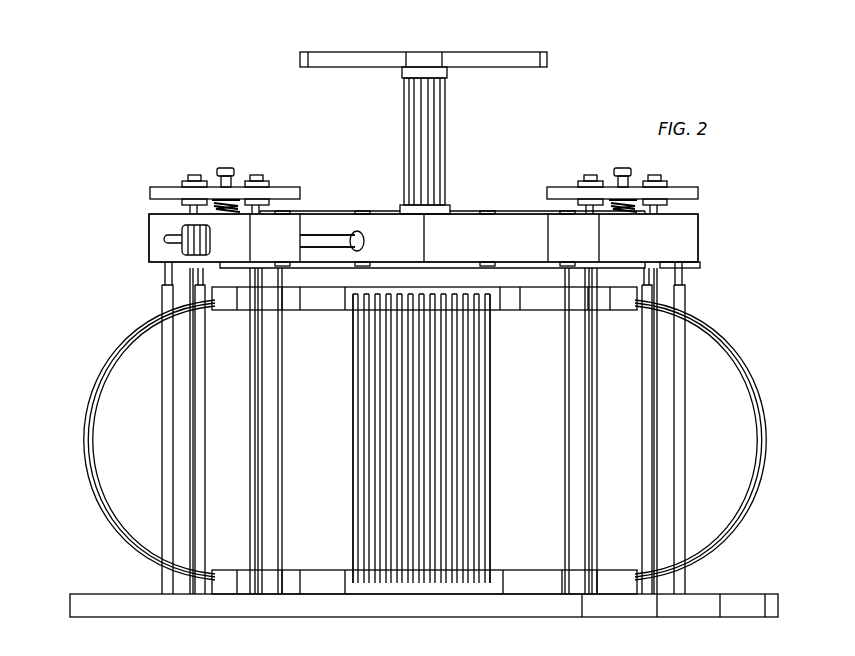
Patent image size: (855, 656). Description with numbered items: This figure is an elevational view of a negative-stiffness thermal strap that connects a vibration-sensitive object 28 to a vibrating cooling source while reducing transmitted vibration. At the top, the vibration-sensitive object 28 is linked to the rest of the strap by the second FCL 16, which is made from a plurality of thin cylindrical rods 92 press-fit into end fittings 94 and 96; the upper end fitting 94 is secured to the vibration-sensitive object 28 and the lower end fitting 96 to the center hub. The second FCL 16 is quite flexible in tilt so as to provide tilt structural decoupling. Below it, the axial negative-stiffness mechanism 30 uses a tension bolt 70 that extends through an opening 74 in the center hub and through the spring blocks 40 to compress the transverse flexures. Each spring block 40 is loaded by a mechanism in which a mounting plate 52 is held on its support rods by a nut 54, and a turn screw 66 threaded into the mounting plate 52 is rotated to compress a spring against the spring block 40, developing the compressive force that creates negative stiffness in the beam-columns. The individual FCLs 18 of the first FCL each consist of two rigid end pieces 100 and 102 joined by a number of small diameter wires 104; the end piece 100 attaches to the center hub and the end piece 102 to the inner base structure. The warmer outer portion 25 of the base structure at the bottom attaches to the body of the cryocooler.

The vibration-sensitive object 28 is at (500, 50).
The end fitting 94 is at (446, 72).
The thin cylindrical rods 92 is at (427, 120).
The end fitting 96 is at (404, 205).
The second FCL 16 is at (487, 160).
The axial negative-stiffness mechanism 30 is at (131, 237).
The tension bolt 70 is at (333, 236).
The opening 74 is at (350, 249).
The mounting plate 52 is at (698, 196).
The nut 54 is at (667, 183).
The turn screw 66 is at (622, 168).
The spring block 40 is at (698, 262).
The end piece 102 is at (533, 578).
The end piece 100 is at (497, 300).
The small diameter wires 104 is at (350, 518).
The FCL 18 is at (80, 440).
The outer portion 25 is at (128, 605).